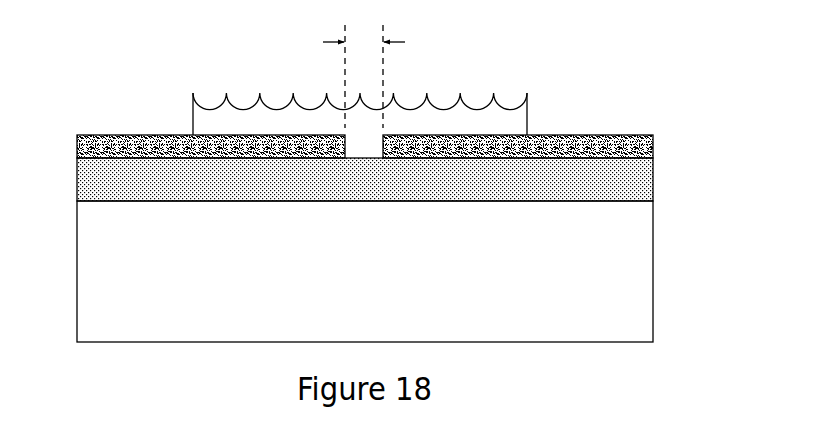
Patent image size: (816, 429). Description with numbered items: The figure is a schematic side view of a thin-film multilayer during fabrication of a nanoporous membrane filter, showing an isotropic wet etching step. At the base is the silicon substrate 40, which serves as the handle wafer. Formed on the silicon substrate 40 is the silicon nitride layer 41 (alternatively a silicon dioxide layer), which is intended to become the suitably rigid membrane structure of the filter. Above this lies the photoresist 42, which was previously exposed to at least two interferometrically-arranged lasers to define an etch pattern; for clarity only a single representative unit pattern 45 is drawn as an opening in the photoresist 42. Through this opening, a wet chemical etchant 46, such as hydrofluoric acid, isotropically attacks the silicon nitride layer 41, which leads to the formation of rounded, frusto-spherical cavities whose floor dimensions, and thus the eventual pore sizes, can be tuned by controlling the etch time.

The silicon substrate 40 is at (652, 267).
The silicon nitride layer 41 is at (652, 189).
The photoresist 42 is at (653, 153).
The representative unit pattern 45 is at (362, 145).
The wet chemical etchant 46 is at (527, 126).